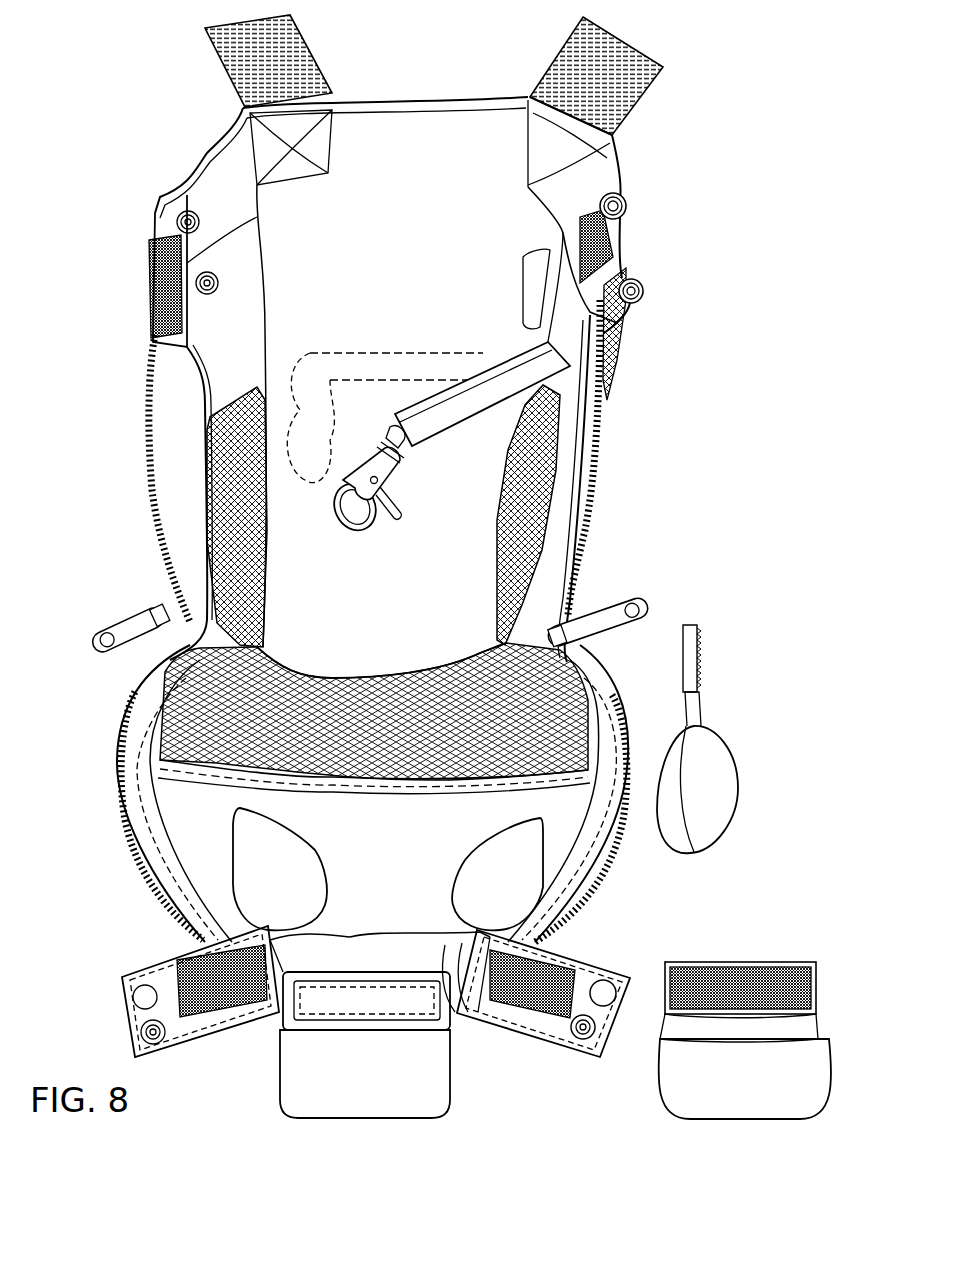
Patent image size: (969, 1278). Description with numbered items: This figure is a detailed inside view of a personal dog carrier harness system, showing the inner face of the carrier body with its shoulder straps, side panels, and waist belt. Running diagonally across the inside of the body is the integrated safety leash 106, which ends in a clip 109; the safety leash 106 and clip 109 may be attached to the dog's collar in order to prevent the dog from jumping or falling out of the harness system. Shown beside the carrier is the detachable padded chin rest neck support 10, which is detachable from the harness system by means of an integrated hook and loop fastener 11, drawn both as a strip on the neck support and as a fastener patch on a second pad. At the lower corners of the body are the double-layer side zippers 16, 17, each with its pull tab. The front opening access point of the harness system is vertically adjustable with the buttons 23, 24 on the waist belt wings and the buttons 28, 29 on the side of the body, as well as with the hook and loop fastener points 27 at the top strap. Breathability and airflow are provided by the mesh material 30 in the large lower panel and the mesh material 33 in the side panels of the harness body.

The padded neck support 10 is at (716, 790).
The hook and loop fastener 11 is at (700, 651).
The side zipper 16 is at (157, 606).
The side zipper 17 is at (608, 606).
The button 23 is at (586, 1031).
The button 24 is at (607, 983).
The hook and loop fastener point 27 is at (603, 250).
The button 28 is at (627, 203).
The button 29 is at (638, 290).
The mesh material 30 is at (190, 727).
The mesh material 33 is at (202, 527).
The safety leash 106 is at (490, 394).
The clip 109 is at (372, 522).